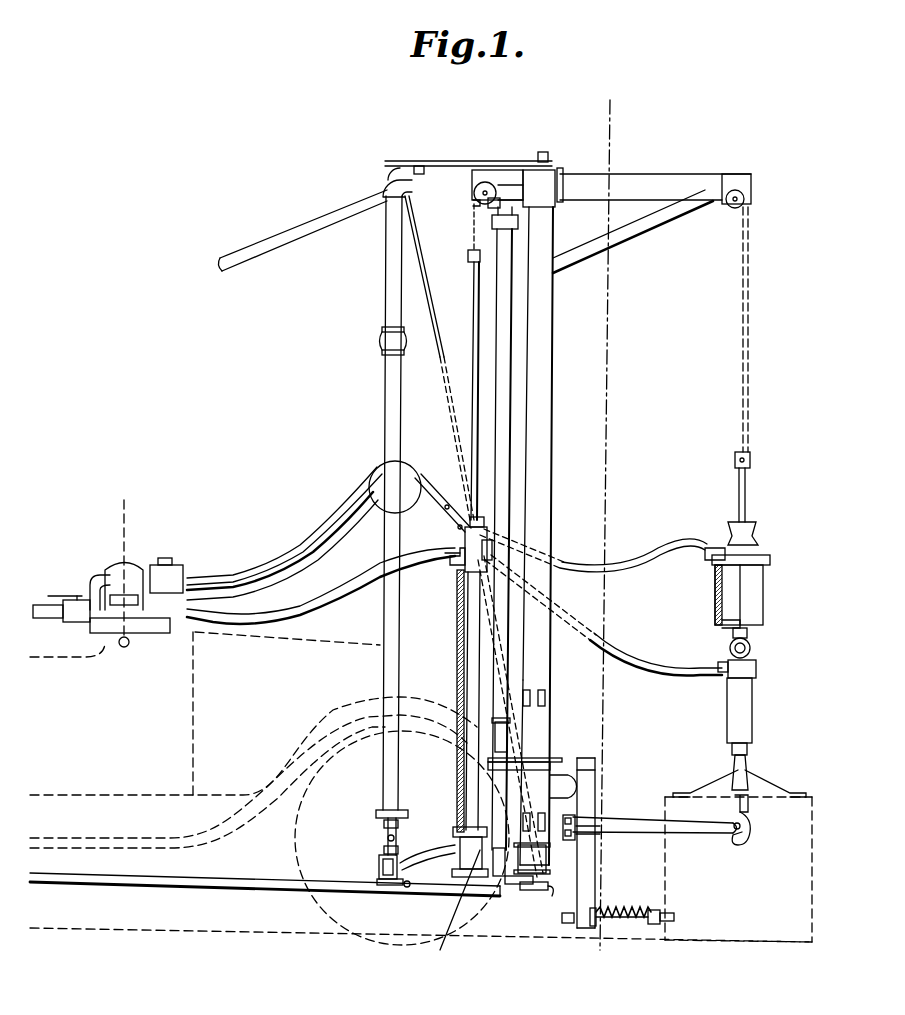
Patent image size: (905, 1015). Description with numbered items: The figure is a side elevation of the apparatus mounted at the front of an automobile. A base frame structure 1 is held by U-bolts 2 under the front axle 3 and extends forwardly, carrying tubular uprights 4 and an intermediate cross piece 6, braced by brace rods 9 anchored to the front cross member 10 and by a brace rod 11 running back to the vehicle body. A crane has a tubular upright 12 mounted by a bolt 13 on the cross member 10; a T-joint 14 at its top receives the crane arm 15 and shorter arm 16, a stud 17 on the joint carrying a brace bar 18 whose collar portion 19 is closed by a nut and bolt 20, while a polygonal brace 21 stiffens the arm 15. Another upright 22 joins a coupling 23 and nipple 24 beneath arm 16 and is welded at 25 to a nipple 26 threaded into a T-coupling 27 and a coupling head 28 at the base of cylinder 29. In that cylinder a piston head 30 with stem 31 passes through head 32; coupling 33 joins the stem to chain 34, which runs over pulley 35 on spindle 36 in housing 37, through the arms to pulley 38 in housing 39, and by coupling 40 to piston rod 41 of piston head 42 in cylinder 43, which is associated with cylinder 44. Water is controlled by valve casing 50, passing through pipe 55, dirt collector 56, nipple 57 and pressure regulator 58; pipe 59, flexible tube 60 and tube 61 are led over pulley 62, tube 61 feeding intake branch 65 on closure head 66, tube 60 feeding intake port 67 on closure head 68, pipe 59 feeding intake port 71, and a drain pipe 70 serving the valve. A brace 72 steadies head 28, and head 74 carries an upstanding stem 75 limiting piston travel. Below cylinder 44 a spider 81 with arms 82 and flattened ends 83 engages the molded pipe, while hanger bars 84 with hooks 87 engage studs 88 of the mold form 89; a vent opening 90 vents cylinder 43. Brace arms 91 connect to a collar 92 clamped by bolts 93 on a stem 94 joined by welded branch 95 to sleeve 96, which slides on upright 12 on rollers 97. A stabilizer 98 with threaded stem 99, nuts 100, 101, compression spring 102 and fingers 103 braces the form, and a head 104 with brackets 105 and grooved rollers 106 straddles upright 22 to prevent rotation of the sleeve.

The base frame structure 1 is at (305, 890).
The U-bolts 2 is at (613, 130).
The front axle 3 is at (378, 880).
The tubular uprights 4 is at (404, 620).
The intermediate cross piece 6 is at (408, 340).
The brace rods 9 is at (436, 322).
The front cross member 10 is at (539, 901).
The brace rod 11 is at (256, 265).
The tubular upright 12 is at (540, 400).
The bolt 13 is at (520, 886).
The T-joint 14 is at (566, 180).
The crane arm 15 is at (636, 180).
The shorter arm 16 is at (512, 172).
The stud 17 is at (548, 155).
The brace bar 18 is at (462, 161).
The collar portion 19 is at (400, 162).
The nut and bolt 20 is at (420, 176).
The polygonal brace 21 is at (635, 222).
The upright 22 is at (514, 345).
The coupling 23 is at (520, 222).
The nipple 24 is at (495, 203).
The weld 25 is at (495, 875).
The nipple 26 is at (540, 855).
The T-coupling 27 is at (575, 820).
The coupling head 28 is at (400, 884).
The cylinder 29 is at (458, 660).
The piston head 30 is at (462, 580).
The piston stem 31 is at (480, 452).
The head 32 is at (482, 548).
The coupling 33 is at (470, 262).
The chain 34 is at (750, 312).
The pulley 35 is at (476, 204).
The spindle 36 is at (487, 191).
The housing 37 is at (475, 178).
The pulley 38 is at (735, 209).
The housing 39 is at (745, 178).
The coupling 40 is at (752, 460).
The piston rod 41 is at (748, 490).
The piston head 42 is at (740, 566).
The cylinder 43 is at (752, 595).
The cylinder 44 is at (752, 718).
The valve casing 50 is at (74, 598).
The pipe 55 is at (97, 575).
The dirt collector 56 is at (130, 570).
The nipple 57 is at (150, 622).
The pressure regulator 58 is at (175, 568).
The pipe 59 is at (265, 618).
The flexible tube 60 is at (308, 552).
The tube 61 is at (238, 570).
The pulley 62 is at (376, 470).
The intake branch 65 is at (718, 548).
The closure head 66 is at (770, 560).
The intake port 67 is at (723, 675).
The closure head 68 is at (757, 672).
The drain pipe 70 is at (40, 605).
The intake port 71 is at (458, 552).
The brace 72 is at (432, 858).
The head 74 is at (450, 911).
The upstanding stem 75 is at (458, 830).
The spider 81 is at (748, 775).
The arms 82 is at (780, 790).
The flattened ends 83 is at (678, 790).
The hanger bars 84 is at (750, 660).
The hook 87 is at (745, 845).
The studs 88 is at (752, 826).
The mold form 89 is at (728, 928).
The vent opening 90 is at (730, 626).
The brace arms 91 is at (687, 822).
The collar 92 is at (590, 828).
The bolts 93 is at (582, 836).
The stem 94 is at (596, 895).
The welded branch 95 is at (590, 778).
The sleeve 96 is at (540, 745).
The rollers 97 is at (548, 688).
The stabilizer 98 is at (635, 925).
The threaded stem 99 is at (655, 912).
The nut 100 is at (566, 922).
The nut 101 is at (665, 920).
The compression spring 102 is at (612, 920).
The fingers 103 is at (675, 917).
The head 104 is at (575, 745).
The brackets 105 is at (507, 742).
The grooved rollers 106 is at (490, 735).